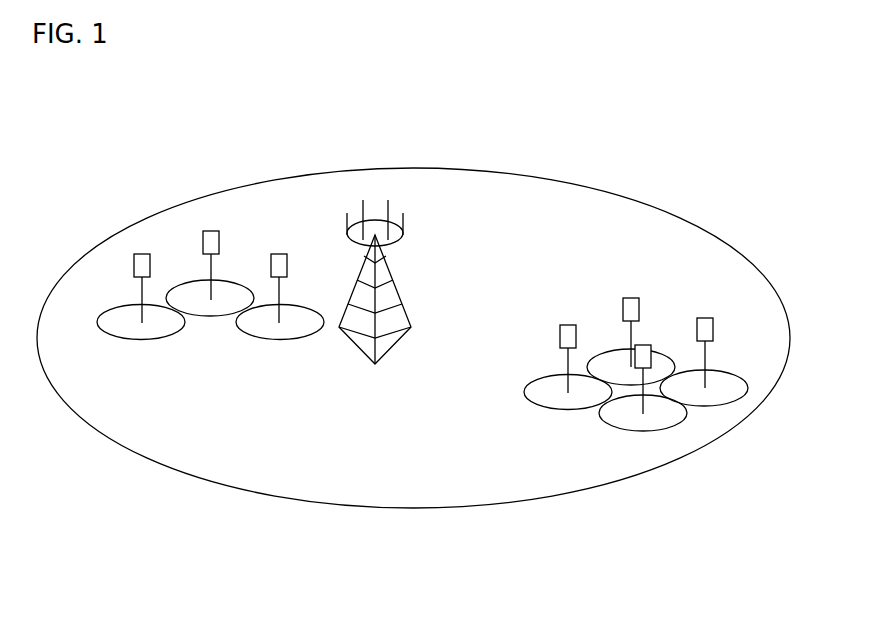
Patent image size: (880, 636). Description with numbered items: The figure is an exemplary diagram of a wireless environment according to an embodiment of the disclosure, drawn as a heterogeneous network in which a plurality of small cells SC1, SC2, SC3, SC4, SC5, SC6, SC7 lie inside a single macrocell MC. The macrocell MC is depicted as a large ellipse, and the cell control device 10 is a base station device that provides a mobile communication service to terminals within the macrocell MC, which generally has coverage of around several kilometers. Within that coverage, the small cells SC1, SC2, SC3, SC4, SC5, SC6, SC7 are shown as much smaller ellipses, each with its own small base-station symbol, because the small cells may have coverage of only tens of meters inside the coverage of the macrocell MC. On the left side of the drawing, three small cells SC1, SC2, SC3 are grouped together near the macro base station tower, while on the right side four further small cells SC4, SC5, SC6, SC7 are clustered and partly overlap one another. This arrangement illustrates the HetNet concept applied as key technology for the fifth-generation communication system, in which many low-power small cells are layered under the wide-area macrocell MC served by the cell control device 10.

The cell control device 10 is at (413, 347).
The macrocell MC is at (550, 178).
The small cell SC1 is at (142, 340).
The small cell SC2 is at (210, 317).
The small cell SC3 is at (278, 340).
The small cell SC4 is at (552, 412).
The small cell SC5 is at (625, 432).
The small cell SC6 is at (723, 368).
The small cell SC7 is at (610, 350).